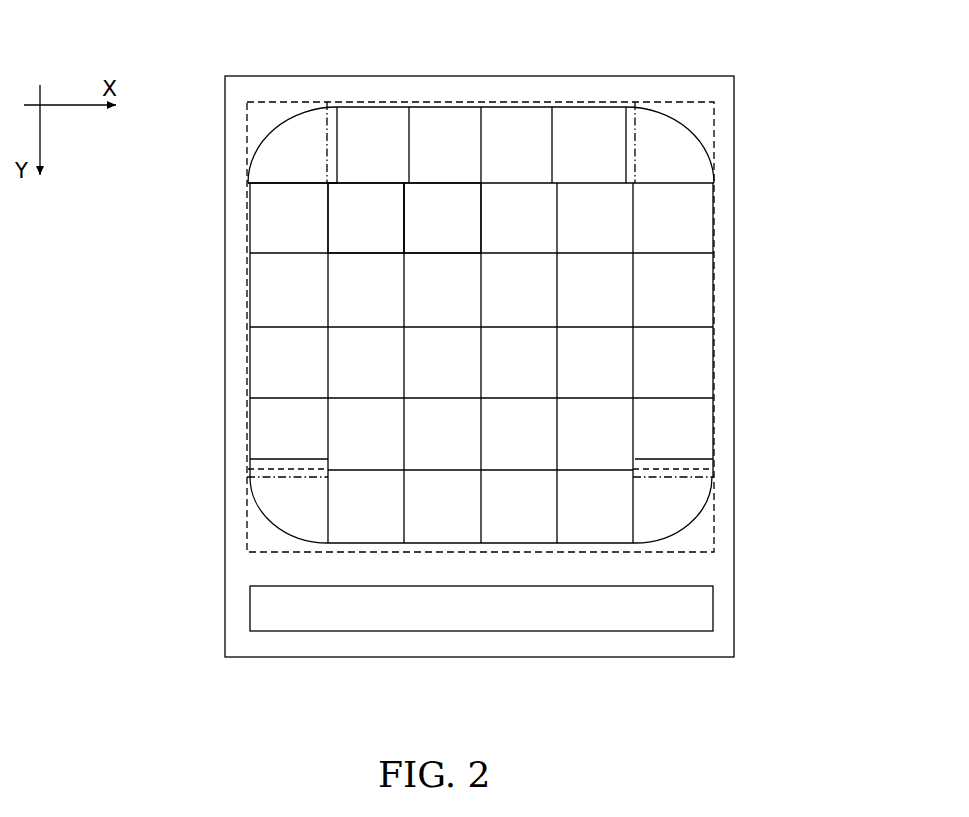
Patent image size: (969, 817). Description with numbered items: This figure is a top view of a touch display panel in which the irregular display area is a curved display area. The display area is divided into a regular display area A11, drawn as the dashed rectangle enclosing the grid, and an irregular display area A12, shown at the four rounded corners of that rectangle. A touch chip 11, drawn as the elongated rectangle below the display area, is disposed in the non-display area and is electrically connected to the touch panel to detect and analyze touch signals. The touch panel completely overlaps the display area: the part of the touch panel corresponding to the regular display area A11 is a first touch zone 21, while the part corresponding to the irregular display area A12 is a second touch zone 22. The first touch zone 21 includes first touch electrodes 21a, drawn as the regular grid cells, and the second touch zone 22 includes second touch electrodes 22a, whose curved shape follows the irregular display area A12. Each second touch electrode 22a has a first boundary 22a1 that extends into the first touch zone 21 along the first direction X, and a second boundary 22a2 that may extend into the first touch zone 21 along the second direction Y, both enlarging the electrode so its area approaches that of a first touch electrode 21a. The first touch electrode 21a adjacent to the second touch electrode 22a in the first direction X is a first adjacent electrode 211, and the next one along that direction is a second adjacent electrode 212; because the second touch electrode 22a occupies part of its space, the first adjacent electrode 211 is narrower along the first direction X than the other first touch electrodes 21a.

The touch chip 11 is at (557, 622).
The first touch zone 21 is at (480, 294).
The regular display area A11 is at (534, 98).
The first touch electrode 21a is at (265, 303).
The first adjacent electrode 211 is at (373, 175).
The second adjacent electrode 212 is at (450, 175).
The second touch zone 22 is at (487, 310).
The irregular display area A12 is at (283, 98).
The second touch electrode 22a is at (272, 162).
The first boundary 22a1 is at (341, 124).
The second boundary 22a2 is at (273, 186).